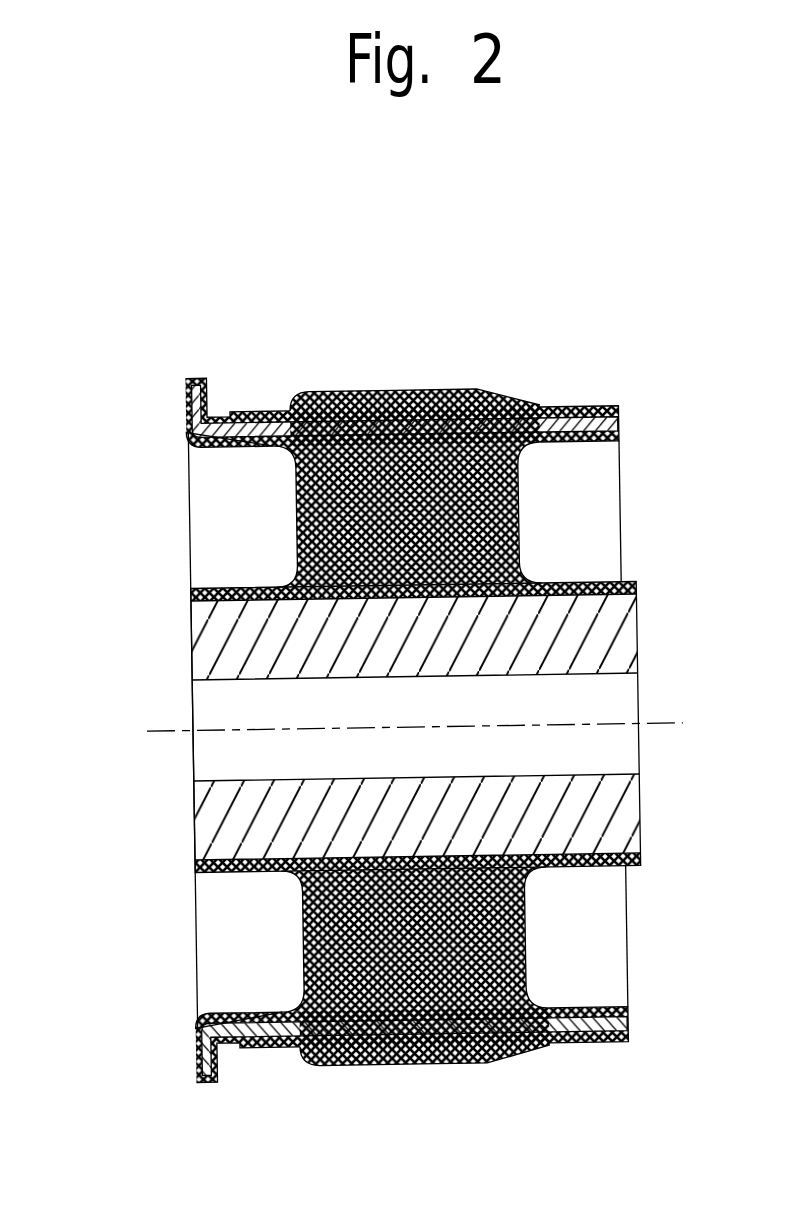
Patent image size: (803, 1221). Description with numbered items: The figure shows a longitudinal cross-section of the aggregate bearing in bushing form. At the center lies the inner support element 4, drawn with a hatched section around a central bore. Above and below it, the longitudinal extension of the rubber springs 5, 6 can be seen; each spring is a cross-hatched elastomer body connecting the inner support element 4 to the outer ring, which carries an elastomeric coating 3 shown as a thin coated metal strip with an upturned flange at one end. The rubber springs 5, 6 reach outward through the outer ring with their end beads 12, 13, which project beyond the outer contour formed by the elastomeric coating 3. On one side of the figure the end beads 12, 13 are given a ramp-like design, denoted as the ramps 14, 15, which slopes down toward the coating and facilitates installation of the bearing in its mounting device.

The elastomeric coating 3 is at (583, 406).
The inner support element 4 is at (238, 837).
The rubber spring 5 is at (358, 519).
The rubber spring 6 is at (374, 939).
The end bead 12 is at (340, 406).
The end bead 13 is at (350, 1051).
The ramp-like design of end bead 14 is at (512, 402).
The ramp-like design of end bead 15 is at (512, 1057).